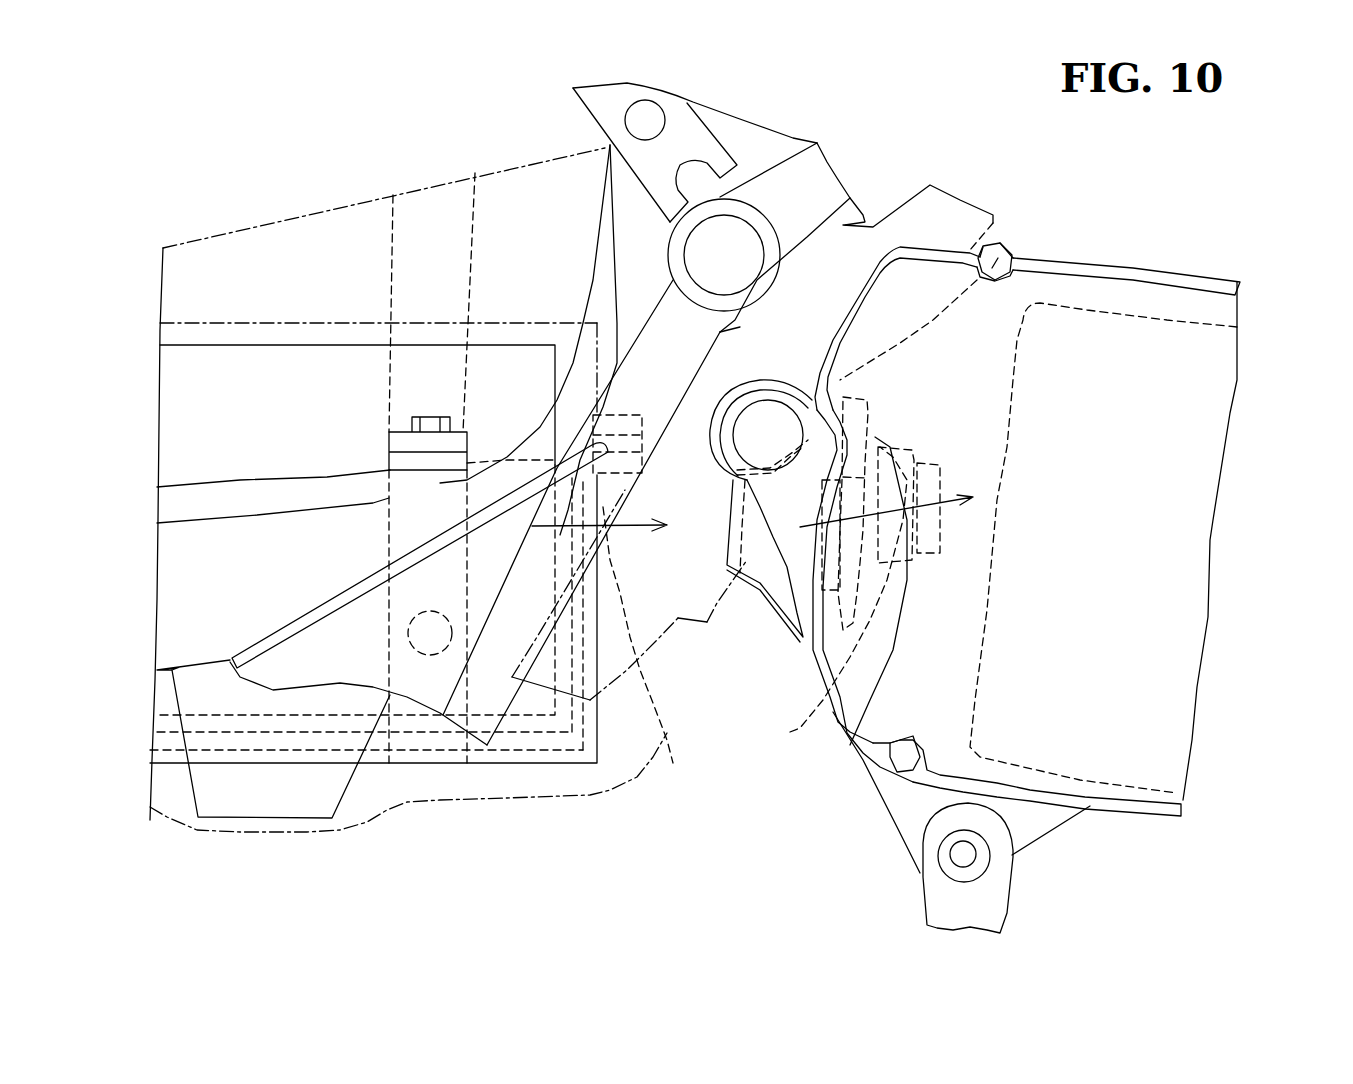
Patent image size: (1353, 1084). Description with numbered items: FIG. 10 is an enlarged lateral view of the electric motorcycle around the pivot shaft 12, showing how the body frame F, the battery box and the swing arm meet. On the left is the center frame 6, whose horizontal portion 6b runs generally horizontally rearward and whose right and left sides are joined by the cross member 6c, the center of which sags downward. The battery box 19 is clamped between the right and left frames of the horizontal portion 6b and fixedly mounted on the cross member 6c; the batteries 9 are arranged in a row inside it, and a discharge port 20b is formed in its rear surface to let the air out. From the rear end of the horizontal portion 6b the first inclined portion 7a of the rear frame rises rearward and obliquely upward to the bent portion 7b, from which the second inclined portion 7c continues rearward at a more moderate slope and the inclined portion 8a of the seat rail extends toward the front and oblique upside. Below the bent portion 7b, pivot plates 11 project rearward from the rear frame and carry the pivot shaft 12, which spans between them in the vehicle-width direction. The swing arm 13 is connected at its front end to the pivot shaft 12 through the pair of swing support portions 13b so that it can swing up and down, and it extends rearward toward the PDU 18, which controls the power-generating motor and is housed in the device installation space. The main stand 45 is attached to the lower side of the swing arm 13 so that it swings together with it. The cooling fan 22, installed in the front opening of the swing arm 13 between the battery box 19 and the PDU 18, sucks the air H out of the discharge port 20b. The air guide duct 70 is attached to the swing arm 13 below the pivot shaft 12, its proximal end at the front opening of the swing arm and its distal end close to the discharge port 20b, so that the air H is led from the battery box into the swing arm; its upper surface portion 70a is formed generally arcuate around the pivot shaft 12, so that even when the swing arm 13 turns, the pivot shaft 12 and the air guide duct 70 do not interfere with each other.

The center frame 6 is at (167, 613).
The horizontal portion 6b is at (247, 555).
The cross member 6c is at (282, 802).
The first inclined portion 7a is at (657, 363).
The bent portion 7b is at (730, 248).
The second inclined portion 7c is at (807, 198).
The inclined portion 8a is at (652, 175).
The batteries 9 is at (233, 401).
The pivot plates 11 is at (933, 220).
The pivot shaft 12 is at (767, 430).
The swing arm 13 is at (1118, 265).
The swing support portions 13b is at (740, 572).
The PDU 18 is at (1183, 393).
The battery box 19 is at (263, 323).
The discharge port 20b is at (629, 643).
The cooling fan 22 is at (842, 602).
The main stand 45 is at (995, 893).
The air guide duct 70 is at (773, 587).
The upper surface portion 70a is at (1008, 255).
The body frame F is at (250, 515).
The air H is at (633, 527).